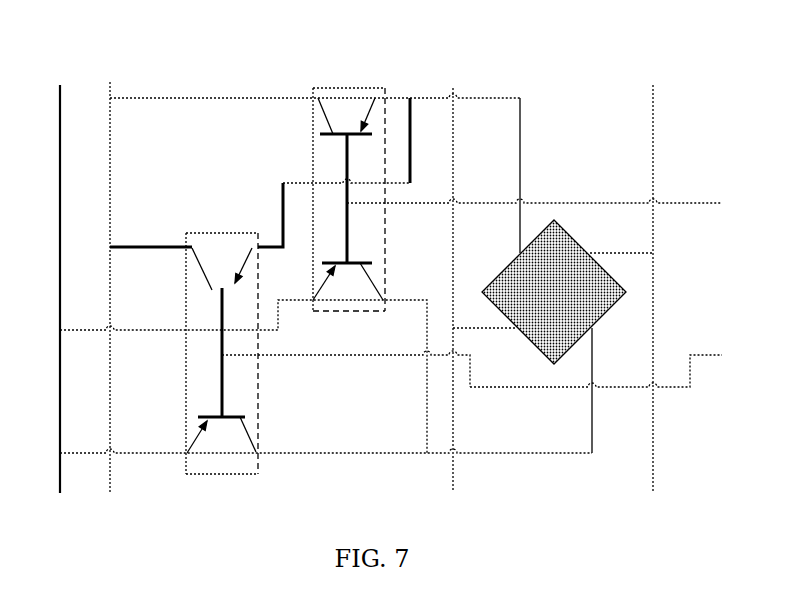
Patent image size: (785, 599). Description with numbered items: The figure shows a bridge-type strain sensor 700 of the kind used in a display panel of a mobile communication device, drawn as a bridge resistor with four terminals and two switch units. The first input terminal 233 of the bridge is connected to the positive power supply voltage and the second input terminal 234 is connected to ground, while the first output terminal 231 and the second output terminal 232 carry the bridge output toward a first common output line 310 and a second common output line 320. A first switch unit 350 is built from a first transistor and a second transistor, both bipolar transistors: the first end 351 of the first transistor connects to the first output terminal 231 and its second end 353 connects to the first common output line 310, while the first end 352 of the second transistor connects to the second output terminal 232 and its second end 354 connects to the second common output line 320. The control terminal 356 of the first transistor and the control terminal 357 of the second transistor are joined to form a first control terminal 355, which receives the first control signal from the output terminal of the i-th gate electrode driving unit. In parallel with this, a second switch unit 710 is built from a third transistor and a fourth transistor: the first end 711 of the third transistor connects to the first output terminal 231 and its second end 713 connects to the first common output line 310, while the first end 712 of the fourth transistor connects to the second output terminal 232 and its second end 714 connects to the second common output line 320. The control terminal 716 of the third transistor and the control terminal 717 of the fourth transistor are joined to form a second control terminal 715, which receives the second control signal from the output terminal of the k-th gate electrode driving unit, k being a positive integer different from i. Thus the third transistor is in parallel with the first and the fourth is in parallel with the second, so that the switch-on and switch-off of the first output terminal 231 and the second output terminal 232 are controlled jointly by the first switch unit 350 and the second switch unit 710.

The bridge-type strain sensor 700 is at (618, 32).
The first common output line 310 is at (110, 98).
The second common output line 320 is at (60, 158).
The first switch unit 350 is at (347, 311).
The first end of the first transistor 351 is at (385, 98).
The first end of the second transistor 352 is at (385, 300).
The second end of the first transistor 353 is at (313, 98).
The second end of the second transistor 354 is at (313, 300).
The first control terminal 355 is at (385, 205).
The control terminal of the first transistor 356 is at (345, 148).
The control terminal of the second transistor 357 is at (347, 243).
The second switch unit 710 is at (222, 474).
The first end of the third transistor 711 is at (258, 247).
The first end of the fourth transistor 712 is at (257, 453).
The second end of the third transistor 713 is at (187, 247).
The second end of the fourth transistor 714 is at (187, 474).
The second control terminal 715 is at (258, 357).
The control terminal of the third transistor 716 is at (222, 300).
The control terminal of the fourth transistor 717 is at (222, 397).
The first output terminal 231 is at (518, 253).
The second output terminal 232 is at (592, 328).
The first input terminal 233 is at (592, 253).
The second input terminal 234 is at (517, 328).